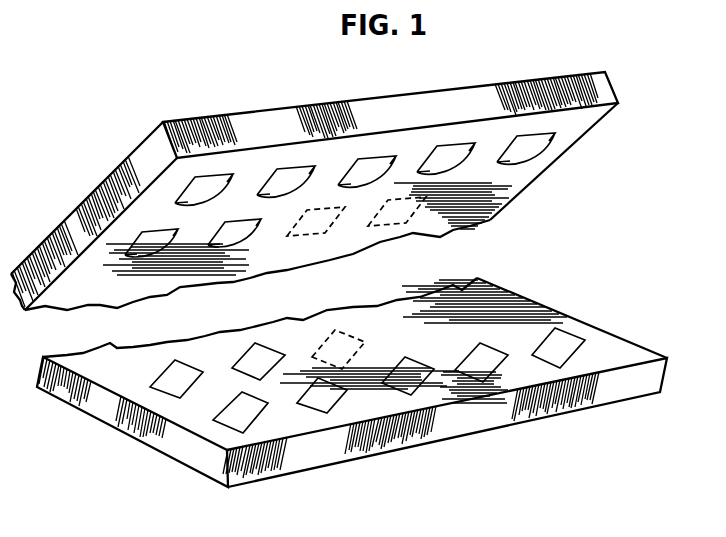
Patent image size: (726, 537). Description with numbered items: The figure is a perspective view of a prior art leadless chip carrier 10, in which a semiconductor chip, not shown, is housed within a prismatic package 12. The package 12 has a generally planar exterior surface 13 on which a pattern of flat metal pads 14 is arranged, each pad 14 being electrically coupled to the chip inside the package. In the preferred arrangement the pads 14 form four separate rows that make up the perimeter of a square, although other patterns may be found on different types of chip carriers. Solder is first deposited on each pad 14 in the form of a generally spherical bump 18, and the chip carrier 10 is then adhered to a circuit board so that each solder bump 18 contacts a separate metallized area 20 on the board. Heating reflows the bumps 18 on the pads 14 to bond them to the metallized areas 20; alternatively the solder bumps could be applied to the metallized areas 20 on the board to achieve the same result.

The leadless chip carrier 10 is at (592, 228).
The prismatic package 12 is at (603, 83).
The planar exterior surface 13 is at (542, 166).
The flat metal pad 14 is at (231, 177).
The solder bump 18 is at (157, 245).
The metallized area 20 is at (400, 386).